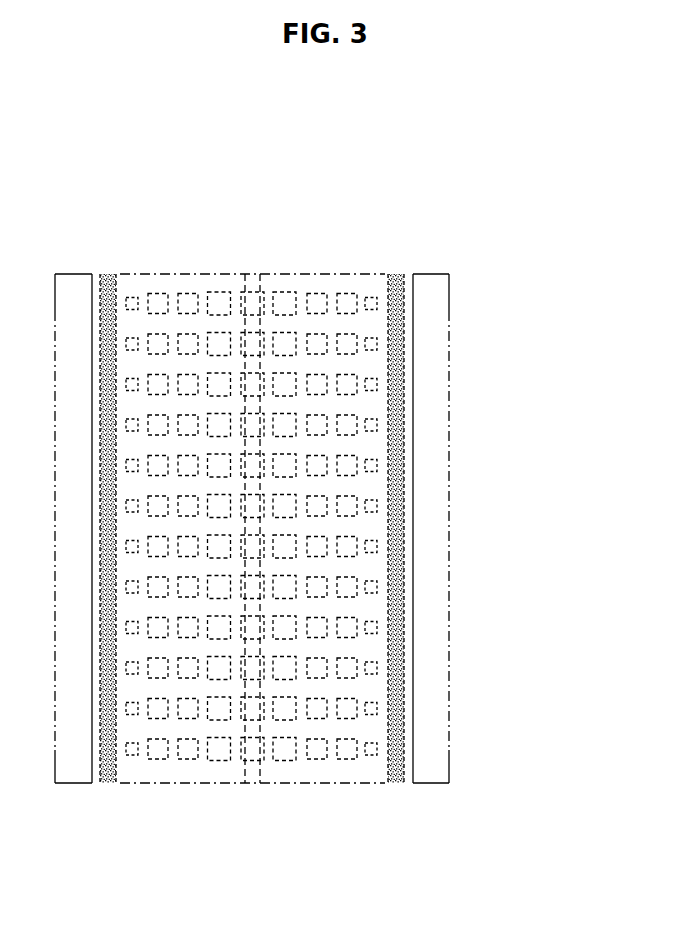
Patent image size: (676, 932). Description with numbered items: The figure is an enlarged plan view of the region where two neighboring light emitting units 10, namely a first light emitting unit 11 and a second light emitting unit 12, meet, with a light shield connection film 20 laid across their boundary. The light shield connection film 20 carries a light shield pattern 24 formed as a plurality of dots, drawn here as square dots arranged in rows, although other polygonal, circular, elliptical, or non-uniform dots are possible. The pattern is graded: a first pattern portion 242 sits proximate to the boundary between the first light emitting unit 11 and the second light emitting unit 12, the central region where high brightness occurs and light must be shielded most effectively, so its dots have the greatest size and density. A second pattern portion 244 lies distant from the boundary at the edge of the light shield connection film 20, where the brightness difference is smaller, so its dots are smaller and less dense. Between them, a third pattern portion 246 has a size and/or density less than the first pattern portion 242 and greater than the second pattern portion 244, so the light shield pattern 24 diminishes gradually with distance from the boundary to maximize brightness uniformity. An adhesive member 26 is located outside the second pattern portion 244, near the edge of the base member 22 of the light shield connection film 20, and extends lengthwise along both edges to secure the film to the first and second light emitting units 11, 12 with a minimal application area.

The light emitting units 10 is at (350, 838).
The first light emitting unit 11 is at (243, 786).
The second light emitting unit 12 is at (262, 786).
The light shield connection film 20 is at (472, 149).
The base member 22 is at (413, 352).
The light shield pattern 24 is at (340, 142).
The adhesive member 26 is at (403, 303).
The first pattern portion 242 is at (219, 292).
The second pattern portion 244 is at (371, 292).
The third pattern portion 246 is at (315, 292).